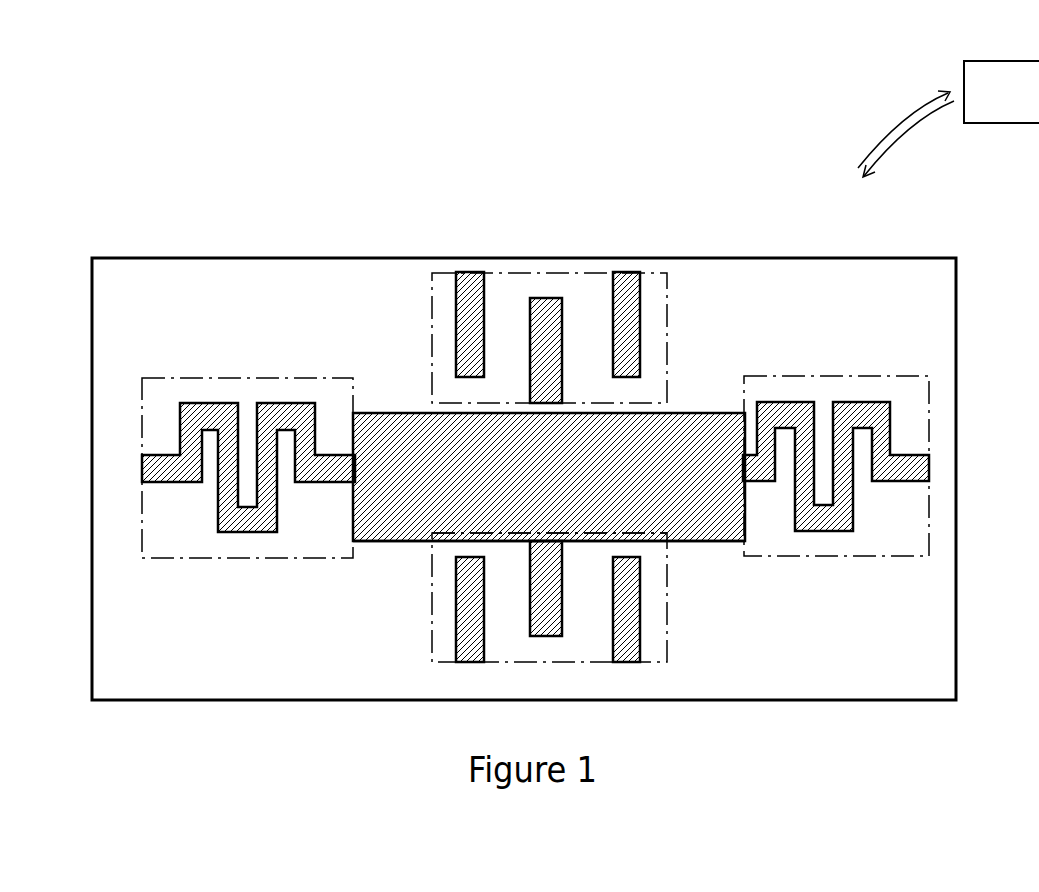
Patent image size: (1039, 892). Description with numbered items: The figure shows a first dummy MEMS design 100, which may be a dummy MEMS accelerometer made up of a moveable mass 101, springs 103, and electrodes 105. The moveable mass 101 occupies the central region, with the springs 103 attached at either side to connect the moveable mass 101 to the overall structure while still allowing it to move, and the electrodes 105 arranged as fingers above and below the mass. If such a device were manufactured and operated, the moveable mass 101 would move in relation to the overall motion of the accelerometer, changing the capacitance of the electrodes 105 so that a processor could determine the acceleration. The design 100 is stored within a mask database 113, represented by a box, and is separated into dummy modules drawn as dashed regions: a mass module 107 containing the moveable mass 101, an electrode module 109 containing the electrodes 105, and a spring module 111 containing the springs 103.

The first dummy MEMS design 100 is at (793, 258).
The moveable mass 101 is at (712, 425).
The springs 103 is at (143, 475).
The electrodes 105 is at (462, 288).
The mass module 107 is at (713, 541).
The electrode module 109 is at (667, 312).
The spring module 111 is at (207, 377).
The mask database 113 is at (1005, 125).